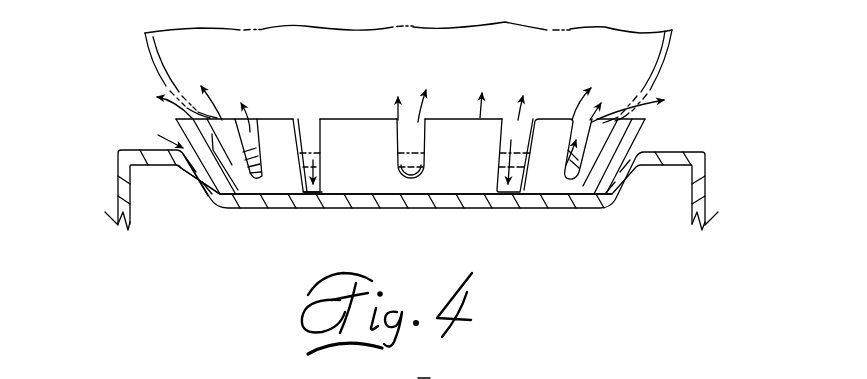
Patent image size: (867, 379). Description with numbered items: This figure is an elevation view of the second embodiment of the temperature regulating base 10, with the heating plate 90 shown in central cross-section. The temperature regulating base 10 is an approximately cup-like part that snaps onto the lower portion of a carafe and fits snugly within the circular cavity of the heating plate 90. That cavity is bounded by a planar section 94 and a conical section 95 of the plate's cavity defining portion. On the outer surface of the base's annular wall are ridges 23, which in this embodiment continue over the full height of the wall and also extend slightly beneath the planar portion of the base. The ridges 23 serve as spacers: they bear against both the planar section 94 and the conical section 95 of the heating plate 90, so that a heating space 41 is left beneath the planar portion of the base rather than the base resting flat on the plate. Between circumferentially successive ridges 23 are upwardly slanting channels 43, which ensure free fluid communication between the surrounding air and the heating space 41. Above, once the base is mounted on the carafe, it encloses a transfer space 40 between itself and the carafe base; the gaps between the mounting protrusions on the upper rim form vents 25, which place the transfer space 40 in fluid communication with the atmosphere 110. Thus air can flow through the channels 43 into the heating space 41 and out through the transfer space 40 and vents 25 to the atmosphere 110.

The temperature regulating base 10 is at (150, 113).
The ridges 23 is at (410, 166).
The vents 25 is at (232, 118).
The transfer space 40 is at (410, 167).
The heating space 41 is at (313, 191).
The channels 43 is at (313, 120).
The heating plate 90 is at (425, 165).
The planar section 94 is at (280, 199).
The conical section 95 is at (197, 178).
The atmosphere 110 is at (724, 48).